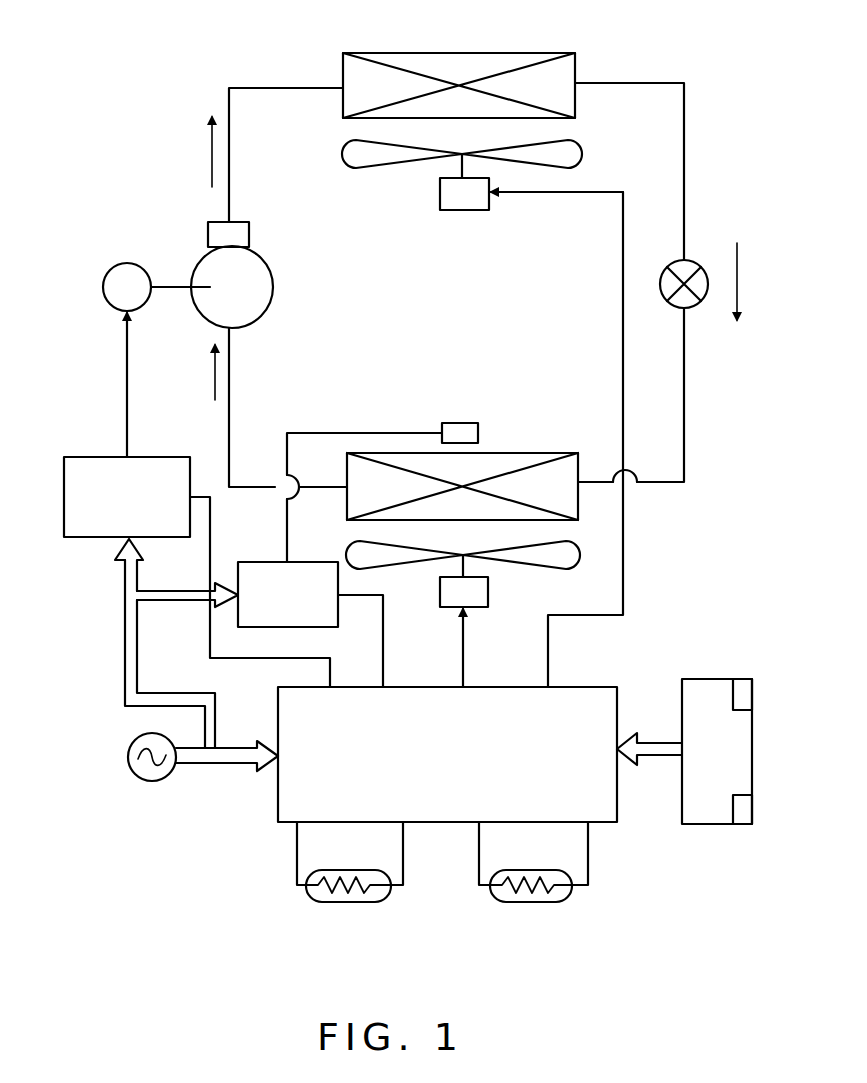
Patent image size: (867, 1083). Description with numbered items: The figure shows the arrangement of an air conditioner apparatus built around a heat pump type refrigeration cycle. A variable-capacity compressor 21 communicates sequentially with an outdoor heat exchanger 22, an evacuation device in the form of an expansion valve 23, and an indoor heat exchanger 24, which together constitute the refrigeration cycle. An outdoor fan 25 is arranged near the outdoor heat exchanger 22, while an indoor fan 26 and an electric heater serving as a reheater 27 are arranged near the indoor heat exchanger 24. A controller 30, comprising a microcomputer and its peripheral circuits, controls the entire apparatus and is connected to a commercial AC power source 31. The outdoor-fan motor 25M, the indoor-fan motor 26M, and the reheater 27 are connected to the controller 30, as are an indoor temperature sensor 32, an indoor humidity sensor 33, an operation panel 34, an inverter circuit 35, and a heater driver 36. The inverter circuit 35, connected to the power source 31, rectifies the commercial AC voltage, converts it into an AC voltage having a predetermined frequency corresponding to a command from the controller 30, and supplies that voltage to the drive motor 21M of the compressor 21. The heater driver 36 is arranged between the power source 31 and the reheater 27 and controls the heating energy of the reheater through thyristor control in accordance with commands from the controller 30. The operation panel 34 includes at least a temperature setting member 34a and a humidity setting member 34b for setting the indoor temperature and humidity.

The variable-capacity compressor 21 is at (273, 290).
The drive motor 21M is at (126, 260).
The outdoor heat exchanger 22 is at (485, 53).
The expansion valve 23 is at (700, 262).
The indoor heat exchanger 24 is at (540, 452).
The outdoor fan 25 is at (412, 175).
The outdoor-fan motor 25M is at (464, 212).
The indoor fan 26 is at (495, 568).
The indoor-fan motor 26M is at (478, 609).
The electric heater (reheater) 27 is at (460, 422).
The controller 30 is at (572, 686).
The commercial AC power source 31 is at (152, 782).
The indoor temperature sensor 32 is at (343, 905).
The indoor humidity sensor 33 is at (527, 905).
The operation panel 34 is at (753, 746).
The temperature setting member 34a is at (740, 690).
The humidity setting member 34b is at (740, 826).
The inverter circuit 35 is at (88, 456).
The heater driver 36 is at (257, 561).